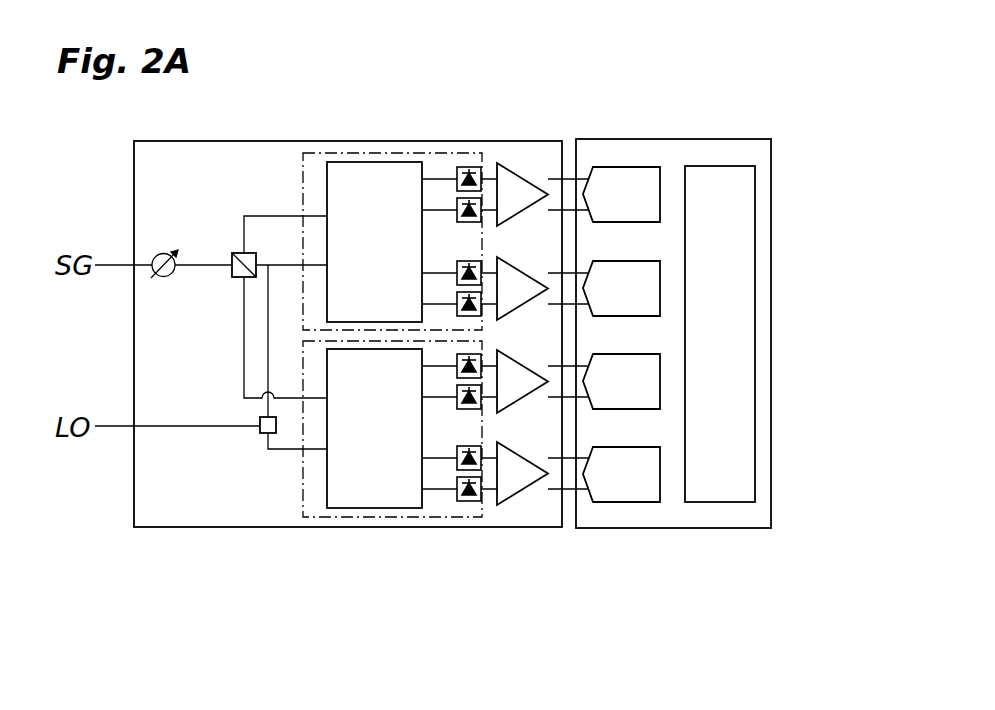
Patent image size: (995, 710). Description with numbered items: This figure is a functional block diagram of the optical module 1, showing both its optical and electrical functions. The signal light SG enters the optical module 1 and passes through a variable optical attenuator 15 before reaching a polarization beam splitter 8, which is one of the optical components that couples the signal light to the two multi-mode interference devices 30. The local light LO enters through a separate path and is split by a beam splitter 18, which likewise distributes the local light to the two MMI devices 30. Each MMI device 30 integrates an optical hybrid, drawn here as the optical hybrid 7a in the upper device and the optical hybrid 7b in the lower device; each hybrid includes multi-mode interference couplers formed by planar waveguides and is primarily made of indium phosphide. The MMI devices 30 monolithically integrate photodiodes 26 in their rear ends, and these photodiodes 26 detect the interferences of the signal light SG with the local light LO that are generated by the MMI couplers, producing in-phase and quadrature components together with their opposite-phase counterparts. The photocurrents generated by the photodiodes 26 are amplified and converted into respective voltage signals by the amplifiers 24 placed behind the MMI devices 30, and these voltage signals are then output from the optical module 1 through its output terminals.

The optical module 1 is at (635, 91).
The variable optical attenuator 15 is at (157, 252).
The polarization beam splitter 8 is at (240, 280).
The beam splitter 18 is at (262, 436).
The multi-mode interference device 30 is at (341, 152).
The optical hybrid 7a is at (382, 180).
The optical hybrid 7b is at (388, 471).
The photodiode 26 is at (470, 166).
The amplifier 24 is at (507, 201).